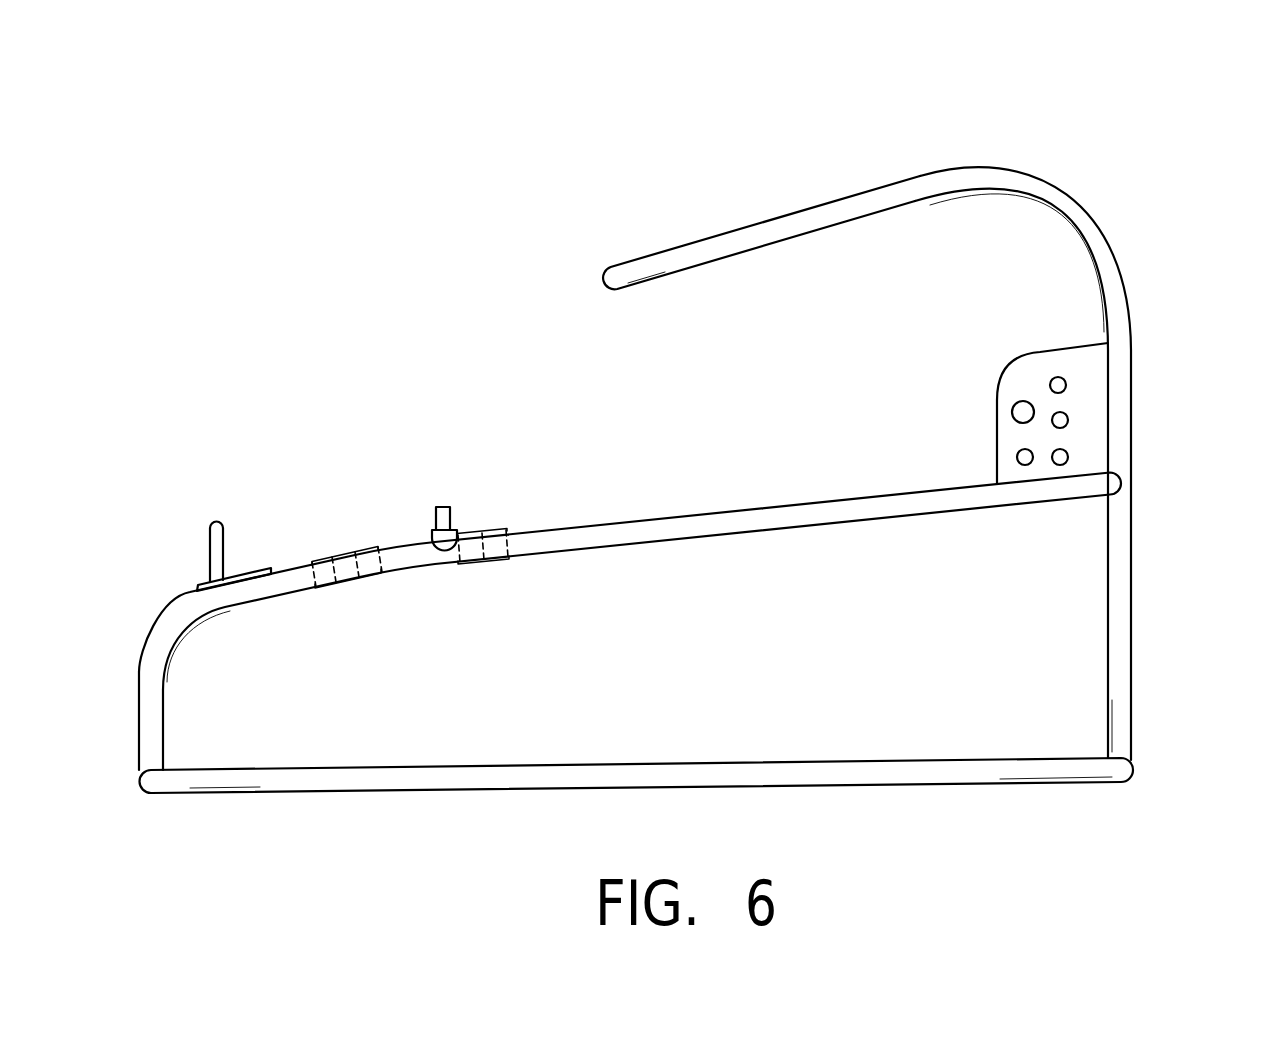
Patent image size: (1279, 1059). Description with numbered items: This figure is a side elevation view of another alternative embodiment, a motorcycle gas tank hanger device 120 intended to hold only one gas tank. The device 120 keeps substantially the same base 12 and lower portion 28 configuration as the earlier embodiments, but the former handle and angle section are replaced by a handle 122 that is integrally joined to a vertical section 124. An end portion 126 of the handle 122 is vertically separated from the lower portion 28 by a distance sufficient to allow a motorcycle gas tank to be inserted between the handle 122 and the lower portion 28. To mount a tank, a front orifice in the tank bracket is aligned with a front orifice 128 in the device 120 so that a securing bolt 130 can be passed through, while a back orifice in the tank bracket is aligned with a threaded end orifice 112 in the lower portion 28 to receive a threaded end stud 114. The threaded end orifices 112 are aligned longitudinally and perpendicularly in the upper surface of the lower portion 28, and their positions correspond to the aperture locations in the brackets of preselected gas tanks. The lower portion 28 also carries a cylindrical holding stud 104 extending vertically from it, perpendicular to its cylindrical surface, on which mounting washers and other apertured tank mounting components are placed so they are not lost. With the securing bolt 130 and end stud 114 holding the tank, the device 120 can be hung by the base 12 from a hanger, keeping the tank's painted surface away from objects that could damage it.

The base 12 is at (693, 764).
The lower portion 28 is at (733, 513).
The holding stud 104 is at (222, 523).
The threaded end orifices 112 is at (323, 586).
The threaded end stud 114 is at (444, 506).
The motorcycle gas tank hanger device 120 is at (768, 172).
The handle 122 is at (1005, 182).
The vertical section 124 is at (1127, 547).
The end portion 126 is at (617, 277).
The front orifice 128 is at (1063, 412).
The securing bolt 130 is at (1022, 409).